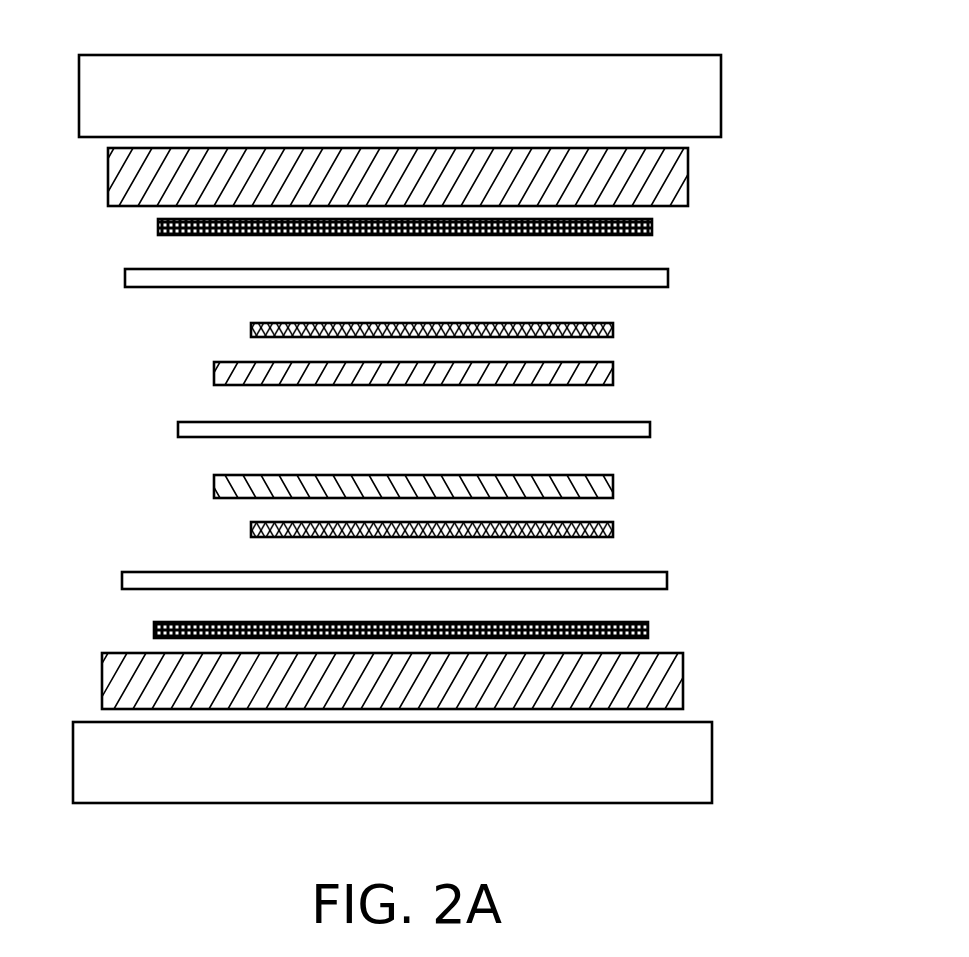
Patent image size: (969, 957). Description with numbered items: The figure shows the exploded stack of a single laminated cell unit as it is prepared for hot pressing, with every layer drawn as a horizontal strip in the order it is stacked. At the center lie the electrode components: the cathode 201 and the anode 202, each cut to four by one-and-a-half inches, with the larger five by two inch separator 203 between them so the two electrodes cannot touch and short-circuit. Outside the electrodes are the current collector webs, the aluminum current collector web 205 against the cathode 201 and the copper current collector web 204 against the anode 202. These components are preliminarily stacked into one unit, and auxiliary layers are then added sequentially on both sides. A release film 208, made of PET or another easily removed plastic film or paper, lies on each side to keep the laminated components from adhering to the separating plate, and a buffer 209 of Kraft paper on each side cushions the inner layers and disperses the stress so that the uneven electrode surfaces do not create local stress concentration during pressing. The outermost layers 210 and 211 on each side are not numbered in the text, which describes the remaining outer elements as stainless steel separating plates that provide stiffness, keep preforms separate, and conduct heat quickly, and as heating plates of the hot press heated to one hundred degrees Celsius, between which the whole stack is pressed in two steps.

The cathode 201 is at (613, 373).
The anode 202 is at (613, 486).
The separator 203 is at (650, 429).
The copper current collector web 204 is at (613, 529).
The aluminum current collector web 205 is at (613, 330).
The release film 208 is at (668, 278).
The buffer 209 is at (652, 227).
The sealing / hatched plate 210 is at (688, 177).
The outer housing plate 211 is at (721, 96).